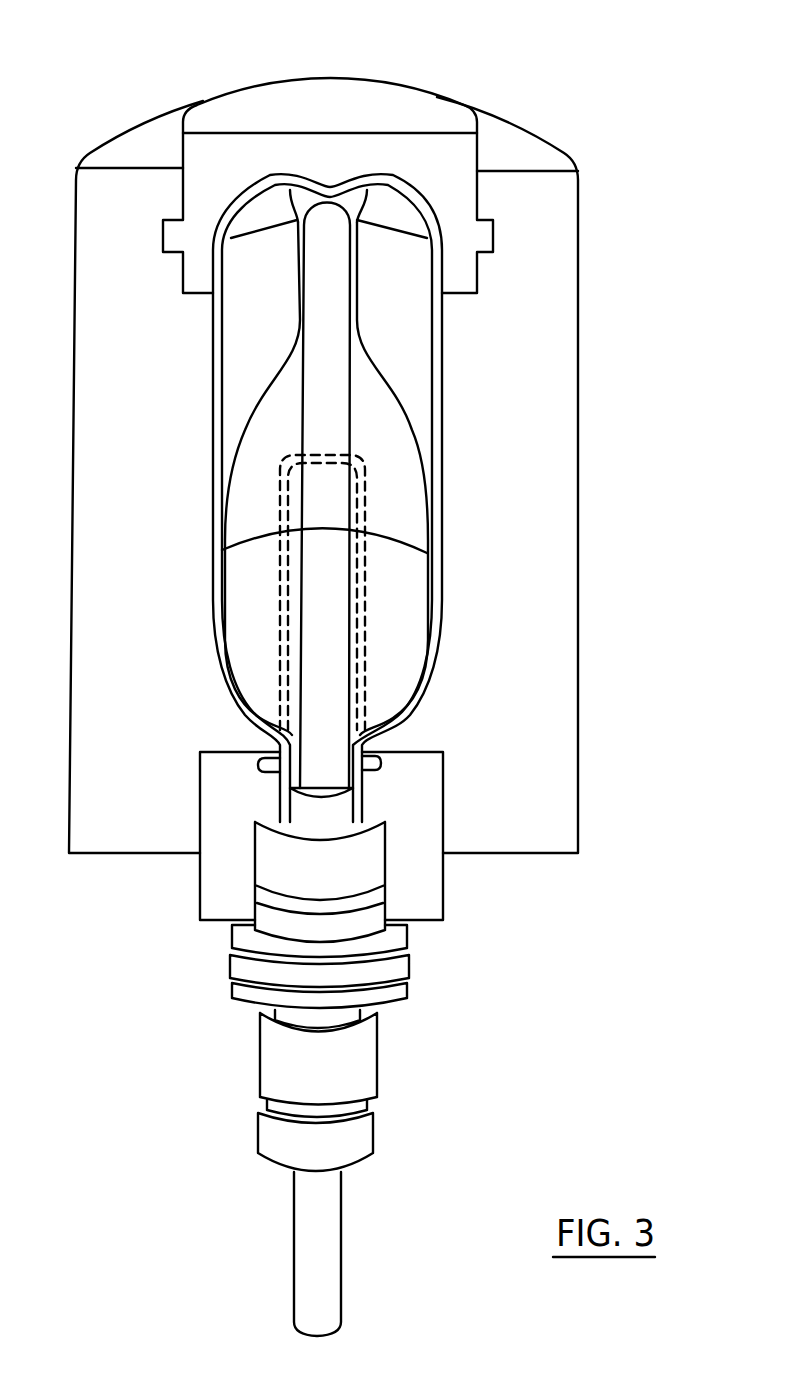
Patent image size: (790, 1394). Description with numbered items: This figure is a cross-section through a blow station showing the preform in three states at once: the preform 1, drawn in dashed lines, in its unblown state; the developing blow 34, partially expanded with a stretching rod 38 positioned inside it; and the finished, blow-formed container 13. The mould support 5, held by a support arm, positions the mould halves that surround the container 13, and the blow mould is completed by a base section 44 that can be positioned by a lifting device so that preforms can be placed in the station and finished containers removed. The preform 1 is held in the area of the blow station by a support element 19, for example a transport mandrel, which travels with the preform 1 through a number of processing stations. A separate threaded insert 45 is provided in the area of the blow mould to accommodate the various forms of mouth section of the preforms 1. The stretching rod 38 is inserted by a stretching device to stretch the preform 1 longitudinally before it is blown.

The preform 1 is at (456, 498).
The mould support 5 is at (515, 513).
The container 13 is at (437, 400).
The support element 19 is at (403, 1000).
The developing blow 34 is at (380, 357).
The stretching rod 38 is at (297, 1228).
The base section 44 is at (405, 110).
The threaded insert 45 is at (423, 880).